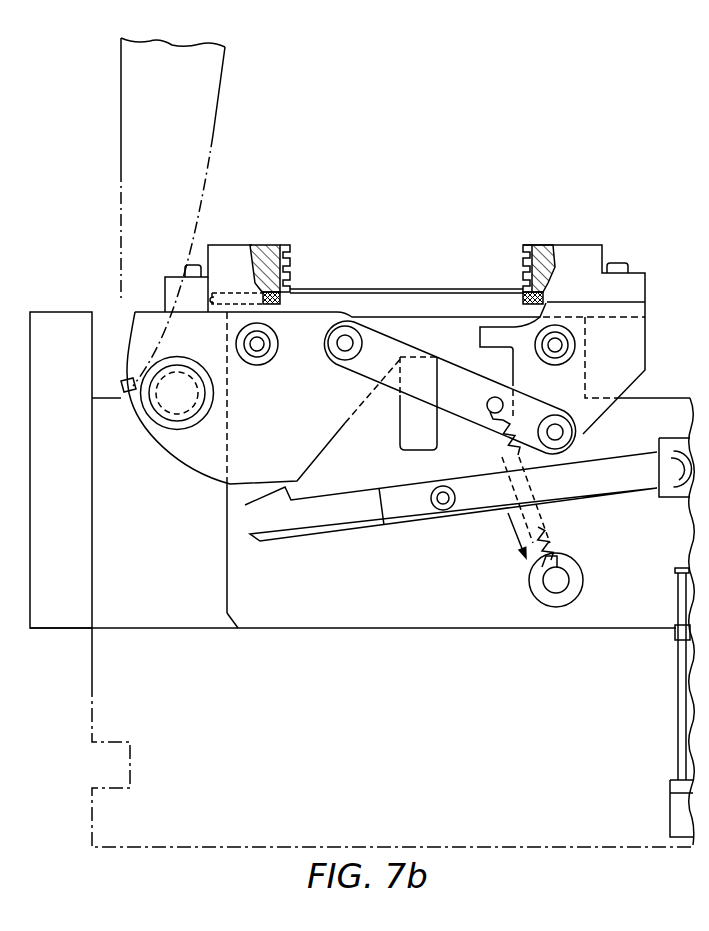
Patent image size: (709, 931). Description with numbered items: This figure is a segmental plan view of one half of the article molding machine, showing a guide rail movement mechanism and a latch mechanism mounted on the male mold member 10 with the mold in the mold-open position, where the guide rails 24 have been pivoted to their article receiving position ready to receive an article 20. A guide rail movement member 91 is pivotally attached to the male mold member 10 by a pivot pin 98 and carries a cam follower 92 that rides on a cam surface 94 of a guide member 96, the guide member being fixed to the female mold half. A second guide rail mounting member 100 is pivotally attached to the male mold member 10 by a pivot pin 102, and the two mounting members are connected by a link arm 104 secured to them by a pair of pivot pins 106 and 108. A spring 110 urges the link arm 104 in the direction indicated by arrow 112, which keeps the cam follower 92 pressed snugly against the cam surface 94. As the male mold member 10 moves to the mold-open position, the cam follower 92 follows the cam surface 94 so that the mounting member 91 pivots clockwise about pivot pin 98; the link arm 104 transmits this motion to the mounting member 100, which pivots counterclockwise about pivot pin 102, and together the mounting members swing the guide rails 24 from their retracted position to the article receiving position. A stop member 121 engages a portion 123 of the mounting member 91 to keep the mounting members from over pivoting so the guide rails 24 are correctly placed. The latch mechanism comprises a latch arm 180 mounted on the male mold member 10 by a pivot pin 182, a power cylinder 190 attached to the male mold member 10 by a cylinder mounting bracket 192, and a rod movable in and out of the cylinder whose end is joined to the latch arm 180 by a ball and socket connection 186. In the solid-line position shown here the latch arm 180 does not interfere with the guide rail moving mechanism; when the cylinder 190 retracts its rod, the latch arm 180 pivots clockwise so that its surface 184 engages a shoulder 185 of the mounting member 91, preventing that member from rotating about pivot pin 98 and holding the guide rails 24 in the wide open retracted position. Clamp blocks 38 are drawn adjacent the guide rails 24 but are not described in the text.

The male mold member 10 is at (351, 737).
The article 20 is at (372, 289).
The guide rails 24 is at (292, 259).
The clamp block 38 is at (240, 245).
The guide rail movement member 91 is at (207, 478).
The cam follower 92 is at (182, 404).
The cam surface 94 is at (208, 167).
The guide member 96 is at (134, 117).
The pivot pin 98 is at (258, 348).
The second guide rail mounting member 100 is at (684, 328).
The pivot pin 102 is at (562, 347).
The link arm 104 is at (458, 428).
The pivot pin 106 is at (344, 347).
The pivot pin 108 is at (557, 432).
The spring 110 is at (556, 555).
The arrow 112 is at (513, 533).
The stop member 121 is at (400, 436).
The portion of mounting member 123 is at (417, 327).
The latch arm 180 is at (317, 533).
The pivot pin 182 is at (443, 510).
The surface of latch member 184 is at (293, 487).
The shoulder 185 is at (126, 382).
The ball and socket connection 186 is at (663, 486).
The power cylinder 190 is at (678, 698).
The cylinder mounting bracket 192 is at (670, 797).